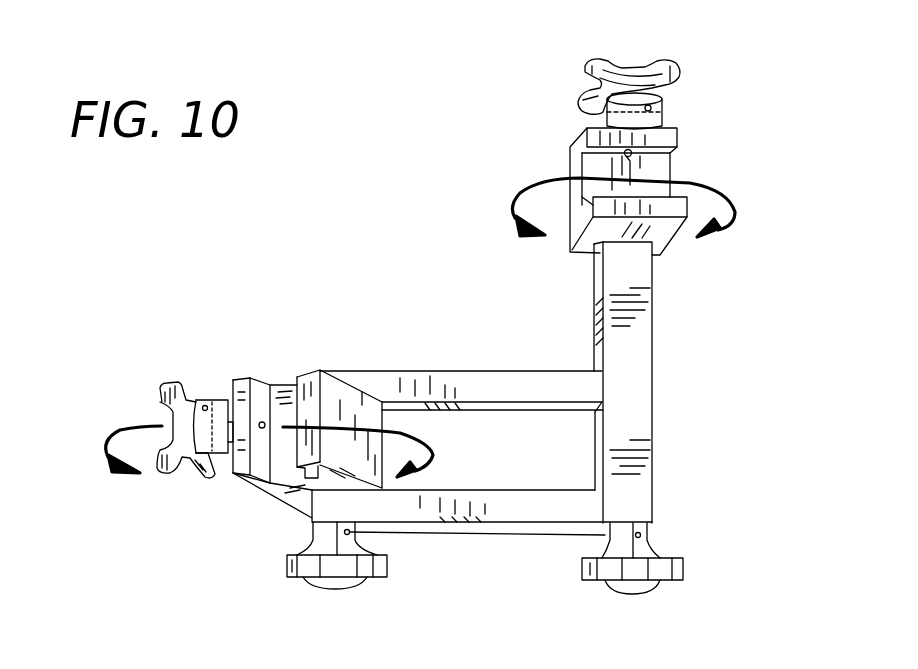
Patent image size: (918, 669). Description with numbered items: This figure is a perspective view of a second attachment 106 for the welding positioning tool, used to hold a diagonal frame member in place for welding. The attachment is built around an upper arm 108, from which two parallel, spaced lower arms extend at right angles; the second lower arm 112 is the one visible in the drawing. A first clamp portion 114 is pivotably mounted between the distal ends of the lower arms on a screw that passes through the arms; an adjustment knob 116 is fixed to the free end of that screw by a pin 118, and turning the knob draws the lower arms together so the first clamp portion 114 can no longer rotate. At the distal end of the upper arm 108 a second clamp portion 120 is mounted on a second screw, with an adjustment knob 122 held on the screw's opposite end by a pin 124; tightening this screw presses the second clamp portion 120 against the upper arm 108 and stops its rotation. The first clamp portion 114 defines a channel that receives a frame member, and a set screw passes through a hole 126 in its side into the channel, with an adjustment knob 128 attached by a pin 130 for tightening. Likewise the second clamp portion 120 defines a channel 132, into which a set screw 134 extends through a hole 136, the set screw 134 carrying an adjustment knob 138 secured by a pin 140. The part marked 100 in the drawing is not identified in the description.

The lower beam 100 is at (438, 518).
The second attachment 106 is at (690, 366).
The upper arm 108 is at (652, 472).
The second lower arm 112 is at (445, 380).
The first clamp portion 114 is at (262, 422).
The adjustment knob 116 is at (295, 577).
The pin 118 is at (367, 535).
The second clamp portion 120 is at (672, 138).
The adjustment knob 122 is at (262, 485).
The pin 124 is at (232, 382).
The hole 126 is at (268, 385).
The adjustment knob 128 is at (162, 400).
The pin 130 is at (202, 396).
The channel 132 is at (690, 184).
The set screw 134 is at (624, 155).
The hole 136 is at (627, 157).
The adjustment knob 138 is at (670, 70).
The pin 140 is at (662, 115).